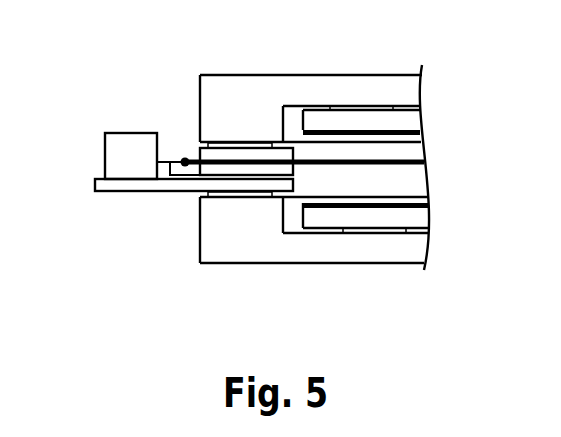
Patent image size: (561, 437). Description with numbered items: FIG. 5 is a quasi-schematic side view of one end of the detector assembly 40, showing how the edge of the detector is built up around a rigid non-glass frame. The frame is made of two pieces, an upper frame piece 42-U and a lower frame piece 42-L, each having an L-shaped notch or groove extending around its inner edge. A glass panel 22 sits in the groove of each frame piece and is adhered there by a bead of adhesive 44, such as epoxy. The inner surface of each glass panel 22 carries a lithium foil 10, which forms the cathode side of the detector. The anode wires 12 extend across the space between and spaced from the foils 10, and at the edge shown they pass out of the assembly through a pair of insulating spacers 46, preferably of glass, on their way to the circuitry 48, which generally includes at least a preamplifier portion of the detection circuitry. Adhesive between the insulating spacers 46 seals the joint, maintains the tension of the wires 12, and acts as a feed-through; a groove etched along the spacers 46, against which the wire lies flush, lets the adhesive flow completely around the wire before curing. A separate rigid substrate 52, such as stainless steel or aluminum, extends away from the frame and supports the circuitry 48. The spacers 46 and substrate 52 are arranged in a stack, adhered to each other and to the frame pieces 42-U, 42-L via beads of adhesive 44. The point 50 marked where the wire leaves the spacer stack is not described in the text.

The detector assembly 40 is at (146, 301).
The upper frame piece 42-U is at (377, 88).
The lower frame piece 42-L is at (345, 263).
The bead of adhesive 44 is at (250, 143).
The insulating spacers 46 is at (233, 152).
The circuitry 48 is at (112, 153).
The pivot connection 50 is at (184, 158).
The rigid substrate 52 is at (118, 194).
The glass panel 22 is at (405, 120).
The lithium foil 10 is at (418, 133).
The anode wires 12 is at (398, 163).